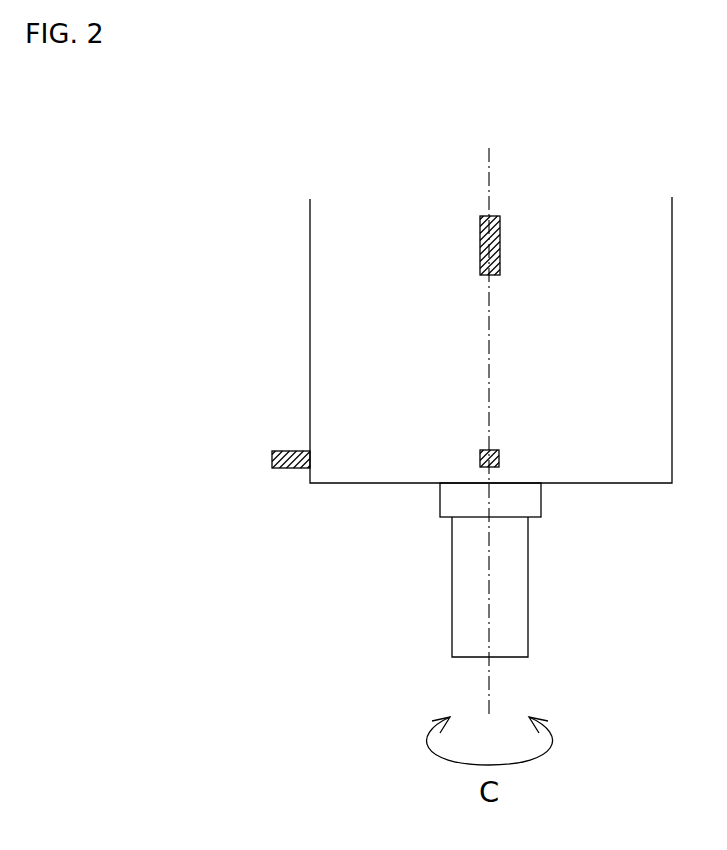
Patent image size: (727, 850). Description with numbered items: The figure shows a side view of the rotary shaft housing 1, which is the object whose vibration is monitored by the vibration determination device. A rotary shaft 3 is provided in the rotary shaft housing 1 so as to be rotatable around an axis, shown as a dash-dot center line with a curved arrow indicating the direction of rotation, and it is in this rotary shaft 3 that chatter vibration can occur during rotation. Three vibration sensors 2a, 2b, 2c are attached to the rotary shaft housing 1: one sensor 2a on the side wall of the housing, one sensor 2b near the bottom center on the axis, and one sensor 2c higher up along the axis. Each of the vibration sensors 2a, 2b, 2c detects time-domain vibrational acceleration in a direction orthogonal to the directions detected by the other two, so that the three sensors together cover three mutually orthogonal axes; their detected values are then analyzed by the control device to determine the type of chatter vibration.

The rotary shaft housing 1 is at (323, 309).
The vibration sensor 2a is at (272, 460).
The vibration sensor 2b is at (499, 458).
The vibration sensor 2c is at (500, 246).
The rotary shaft 3 is at (452, 583).